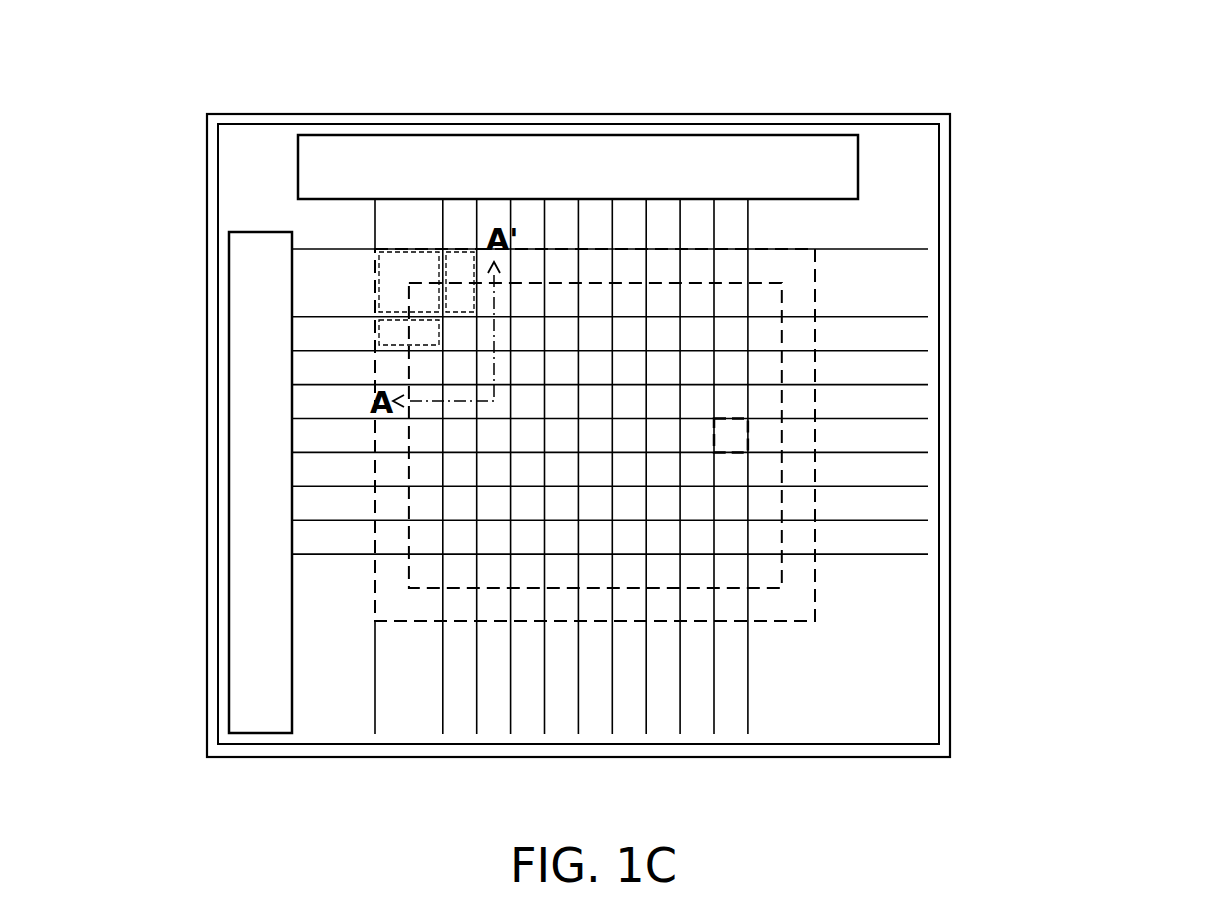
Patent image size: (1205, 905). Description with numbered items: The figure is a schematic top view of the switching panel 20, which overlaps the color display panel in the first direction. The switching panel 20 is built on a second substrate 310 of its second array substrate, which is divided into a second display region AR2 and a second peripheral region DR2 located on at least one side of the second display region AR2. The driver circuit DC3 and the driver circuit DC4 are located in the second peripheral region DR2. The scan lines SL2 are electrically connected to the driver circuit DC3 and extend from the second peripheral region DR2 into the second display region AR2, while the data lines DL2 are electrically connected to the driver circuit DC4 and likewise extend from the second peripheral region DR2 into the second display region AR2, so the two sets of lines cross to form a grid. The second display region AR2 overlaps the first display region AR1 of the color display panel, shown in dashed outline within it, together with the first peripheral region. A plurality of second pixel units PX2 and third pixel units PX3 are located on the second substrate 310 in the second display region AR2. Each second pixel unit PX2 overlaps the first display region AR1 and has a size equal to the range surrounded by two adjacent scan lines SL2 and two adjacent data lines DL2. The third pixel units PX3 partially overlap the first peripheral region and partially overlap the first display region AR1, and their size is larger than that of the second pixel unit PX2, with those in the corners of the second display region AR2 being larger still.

The switching panel 20 is at (1172, 849).
The second substrate 310 is at (212, 697).
The second peripheral region DR2 is at (939, 208).
The driver circuit DC4 is at (675, 157).
The driver circuit DC3 is at (258, 524).
The data line DL2 is at (748, 228).
The scan line SL2 is at (302, 248).
The second display region AR2 is at (815, 277).
The first display region AR1 is at (782, 371).
The second pixel unit PX2 is at (730, 434).
The third pixel unit PX3 is at (395, 256).